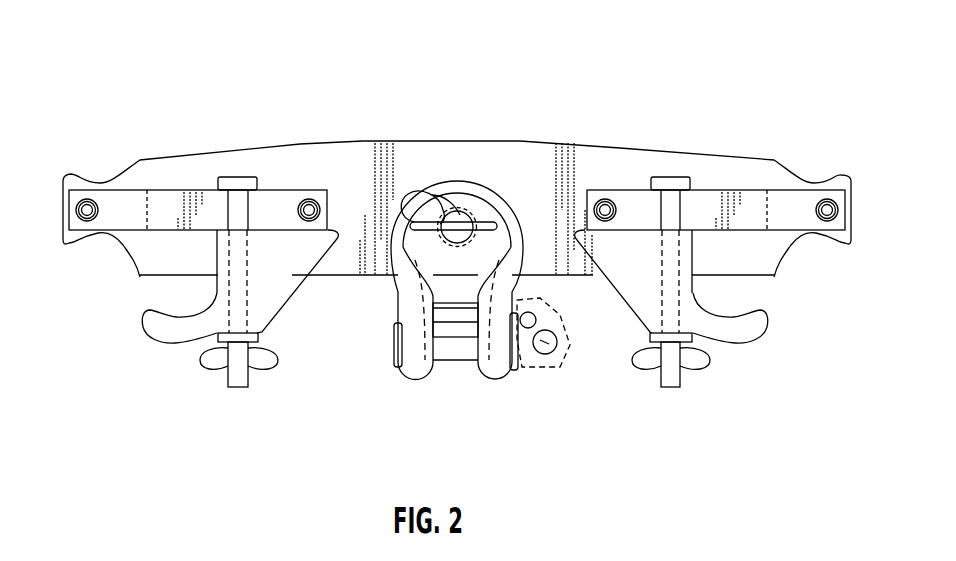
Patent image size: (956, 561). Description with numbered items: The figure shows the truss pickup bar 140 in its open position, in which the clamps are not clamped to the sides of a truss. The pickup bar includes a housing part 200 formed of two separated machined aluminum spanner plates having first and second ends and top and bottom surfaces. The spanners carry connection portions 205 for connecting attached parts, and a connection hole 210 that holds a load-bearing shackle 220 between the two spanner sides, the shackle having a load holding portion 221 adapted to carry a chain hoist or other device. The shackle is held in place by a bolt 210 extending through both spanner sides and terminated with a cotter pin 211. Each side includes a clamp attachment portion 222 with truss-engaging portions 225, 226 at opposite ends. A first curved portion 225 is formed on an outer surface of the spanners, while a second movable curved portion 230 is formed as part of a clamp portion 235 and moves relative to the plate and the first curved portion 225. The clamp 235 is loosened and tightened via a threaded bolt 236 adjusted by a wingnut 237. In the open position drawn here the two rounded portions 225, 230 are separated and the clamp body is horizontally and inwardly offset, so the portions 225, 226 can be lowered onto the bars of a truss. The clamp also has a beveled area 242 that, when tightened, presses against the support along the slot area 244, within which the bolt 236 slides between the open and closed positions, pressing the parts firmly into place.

The truss pickup bar 140 is at (636, 132).
The housing part 200 is at (518, 150).
The connection portion 205 is at (311, 191).
The connection hole / bolt 210 is at (453, 210).
The cotter pin 211 is at (420, 185).
The shackle 220 is at (420, 330).
The load holding portion 221 is at (463, 327).
The clamp assembly 222 is at (113, 357).
The first curved portion 225 is at (103, 236).
The truss-engaging portion 226 is at (790, 243).
The second movable curved portion 230 is at (177, 317).
The clamp portion 235 is at (285, 293).
The threaded bolt 236 is at (237, 380).
The wingnut 237 is at (267, 372).
The beveled area 242 is at (337, 229).
The slot area 244 is at (247, 143).